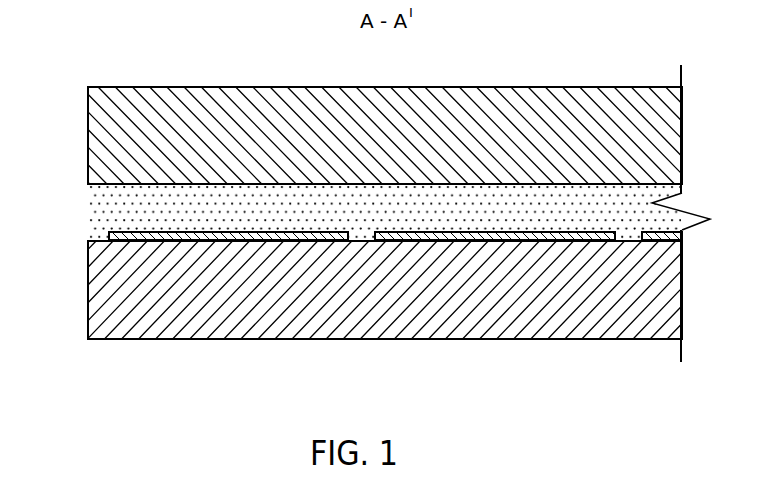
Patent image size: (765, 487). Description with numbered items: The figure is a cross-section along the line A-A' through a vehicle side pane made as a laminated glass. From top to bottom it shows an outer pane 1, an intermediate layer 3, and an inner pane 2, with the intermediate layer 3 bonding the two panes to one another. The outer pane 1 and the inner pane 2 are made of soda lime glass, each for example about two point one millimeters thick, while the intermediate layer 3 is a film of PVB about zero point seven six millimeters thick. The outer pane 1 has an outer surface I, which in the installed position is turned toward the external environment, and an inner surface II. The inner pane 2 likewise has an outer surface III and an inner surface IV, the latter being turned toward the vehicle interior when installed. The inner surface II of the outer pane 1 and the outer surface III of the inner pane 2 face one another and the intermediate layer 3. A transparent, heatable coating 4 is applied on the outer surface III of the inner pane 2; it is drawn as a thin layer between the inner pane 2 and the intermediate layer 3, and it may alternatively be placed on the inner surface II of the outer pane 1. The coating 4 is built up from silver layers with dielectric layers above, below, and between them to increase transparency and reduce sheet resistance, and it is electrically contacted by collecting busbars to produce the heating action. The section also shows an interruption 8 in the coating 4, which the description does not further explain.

The outer pane 1 is at (98, 140).
The inner pane 2 is at (100, 292).
The intermediate layer 3 is at (100, 207).
The heatable coating 4 is at (231, 242).
The gap / opening in fourth layer 8 is at (362, 235).
The outer surface of the outer pane I is at (110, 86).
The inner surface of the outer pane II is at (287, 183).
The outer surface of the inner pane III is at (206, 243).
The inner surface of the inner pane IV is at (218, 339).